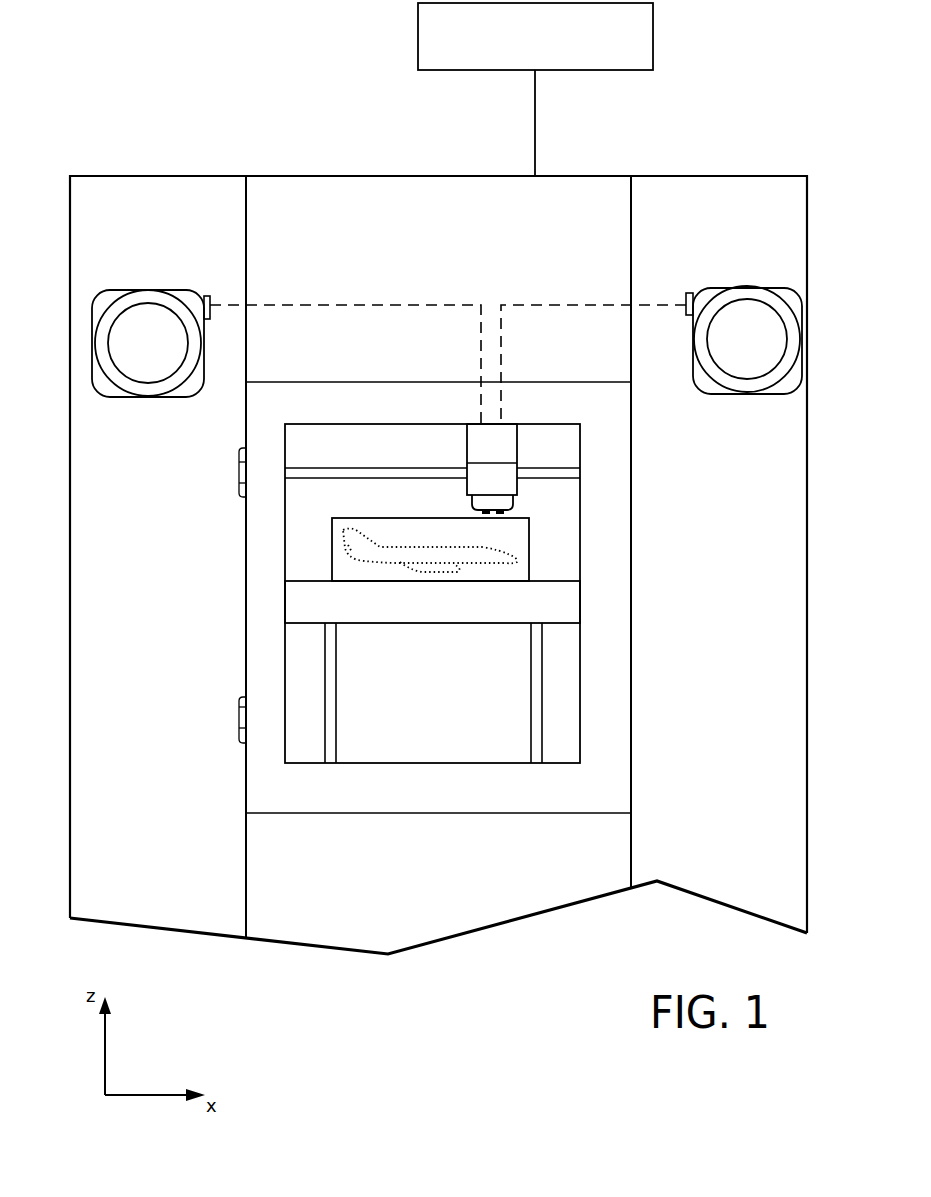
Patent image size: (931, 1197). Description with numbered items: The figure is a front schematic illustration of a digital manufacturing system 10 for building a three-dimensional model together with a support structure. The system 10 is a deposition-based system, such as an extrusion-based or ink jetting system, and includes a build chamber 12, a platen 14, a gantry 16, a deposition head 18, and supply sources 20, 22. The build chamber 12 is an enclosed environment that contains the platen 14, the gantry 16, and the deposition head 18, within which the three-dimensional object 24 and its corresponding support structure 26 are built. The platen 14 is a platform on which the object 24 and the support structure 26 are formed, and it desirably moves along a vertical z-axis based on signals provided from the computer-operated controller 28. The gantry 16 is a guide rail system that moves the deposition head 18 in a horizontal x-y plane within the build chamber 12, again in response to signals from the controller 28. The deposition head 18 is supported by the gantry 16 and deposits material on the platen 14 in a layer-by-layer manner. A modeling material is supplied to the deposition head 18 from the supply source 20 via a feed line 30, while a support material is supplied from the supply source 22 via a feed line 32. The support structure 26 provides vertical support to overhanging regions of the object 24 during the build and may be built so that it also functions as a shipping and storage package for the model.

The digital manufacturing system 10 is at (274, 135).
The build chamber 12 is at (580, 555).
The platen 14 is at (570, 609).
The gantry 16 is at (350, 473).
The deposition head 18 is at (505, 473).
The supply source 20 is at (715, 288).
The supply source 22 is at (183, 290).
The 3D object 24 is at (347, 542).
The support structure 26 is at (332, 570).
The computer-operated controller 28 is at (418, 23).
The feed line 30 is at (545, 305).
The feed line 32 is at (407, 305).